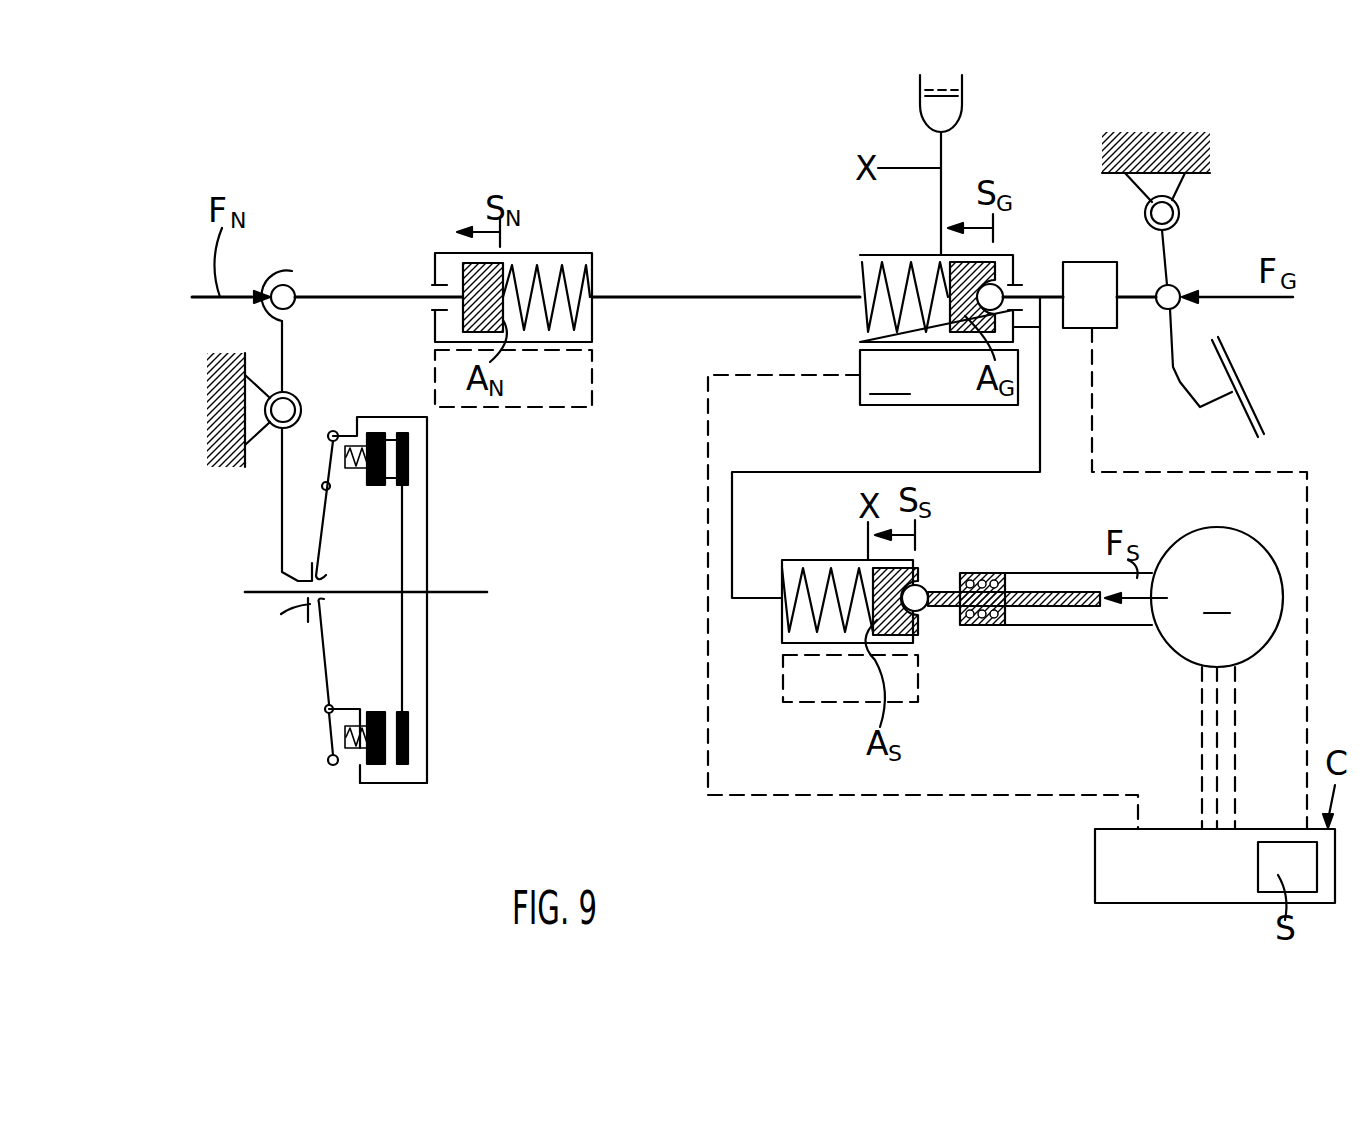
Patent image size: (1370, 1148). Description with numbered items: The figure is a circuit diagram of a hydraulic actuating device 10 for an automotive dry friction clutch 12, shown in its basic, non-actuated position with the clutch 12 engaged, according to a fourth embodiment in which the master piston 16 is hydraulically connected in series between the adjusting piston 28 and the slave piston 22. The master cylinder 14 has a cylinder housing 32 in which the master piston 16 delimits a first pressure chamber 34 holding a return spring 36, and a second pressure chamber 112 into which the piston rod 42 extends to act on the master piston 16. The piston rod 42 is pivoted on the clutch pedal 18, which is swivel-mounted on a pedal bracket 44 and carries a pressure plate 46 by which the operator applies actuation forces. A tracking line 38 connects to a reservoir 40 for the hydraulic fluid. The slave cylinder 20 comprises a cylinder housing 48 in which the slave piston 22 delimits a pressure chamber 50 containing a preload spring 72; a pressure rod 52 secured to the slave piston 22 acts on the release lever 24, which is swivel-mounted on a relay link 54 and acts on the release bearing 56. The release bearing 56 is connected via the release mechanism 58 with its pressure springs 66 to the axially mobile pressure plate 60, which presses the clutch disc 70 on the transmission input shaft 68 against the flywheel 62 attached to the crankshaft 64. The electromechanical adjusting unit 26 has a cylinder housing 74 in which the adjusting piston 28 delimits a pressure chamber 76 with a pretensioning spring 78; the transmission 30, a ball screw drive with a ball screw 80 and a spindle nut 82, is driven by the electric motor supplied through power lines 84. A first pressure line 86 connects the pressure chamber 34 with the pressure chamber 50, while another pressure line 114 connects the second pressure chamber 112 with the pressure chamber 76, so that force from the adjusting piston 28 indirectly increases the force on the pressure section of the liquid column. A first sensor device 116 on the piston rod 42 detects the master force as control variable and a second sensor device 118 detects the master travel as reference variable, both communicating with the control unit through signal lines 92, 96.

The hydraulic actuating device 10 is at (646, 170).
The clutch 12 is at (266, 699).
The master cylinder 14 is at (860, 245).
The master piston 16 is at (992, 266).
The clutch pedal 18 is at (1172, 370).
The slave cylinder 20 is at (441, 238).
The slave piston 22 is at (503, 280).
The release lever 24 is at (282, 510).
The electromechanical adjusting unit 26 is at (947, 657).
The adjusting piston 28 is at (918, 580).
The transmission 30 is at (1005, 561).
The cylinder housing 32 is at (858, 277).
The pressure chamber 34 is at (862, 322).
The return spring 36 is at (890, 262).
The tracking line 38 is at (942, 152).
The reservoir 40 is at (963, 95).
The piston rod 42 is at (1042, 296).
The pedal bracket 44 is at (1178, 185).
The pressure plate 46 is at (1240, 400).
The cylinder housing 48 is at (595, 262).
The pressure chamber 50 is at (565, 265).
The pressure rod 52 is at (330, 293).
The relay link 54 is at (265, 398).
The release bearing 56 is at (278, 613).
The release mechanism 58 is at (336, 521).
The pressure plate 60 is at (373, 433).
The flywheel 62 is at (390, 783).
The crankshaft 64 is at (460, 593).
The pressure springs 66 is at (400, 462).
The transmission input shaft 68 is at (357, 593).
The clutch disc 70 is at (405, 482).
The preload spring 72 is at (580, 316).
The cylinder housing 74 is at (782, 612).
The pressure chamber 76 is at (792, 575).
The pretensioning spring 78 is at (793, 565).
The ball screw 80 is at (1093, 607).
The spindle nut 82 is at (992, 625).
The power lines 84 is at (1215, 765).
The pressure line 86 is at (690, 296).
The signal line 92 is at (1307, 525).
The signal line 96 is at (845, 796).
The pressure chamber 112 is at (1018, 330).
The pressure line 114 is at (872, 472).
The first sensor device 116 is at (1098, 315).
The second sensor device 118 is at (545, 405).